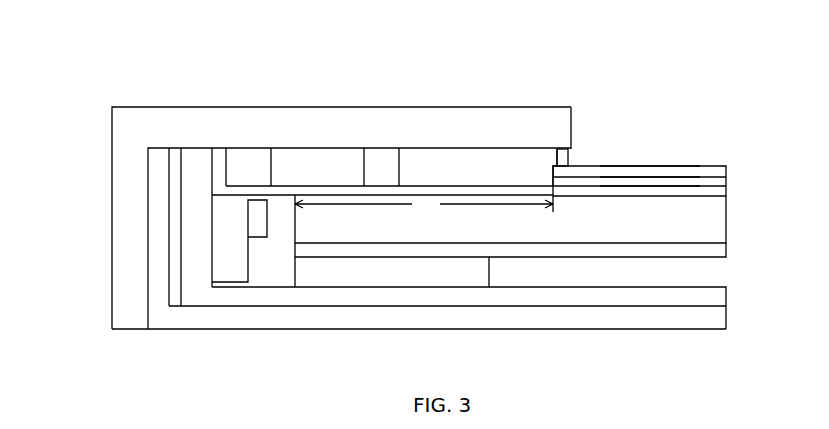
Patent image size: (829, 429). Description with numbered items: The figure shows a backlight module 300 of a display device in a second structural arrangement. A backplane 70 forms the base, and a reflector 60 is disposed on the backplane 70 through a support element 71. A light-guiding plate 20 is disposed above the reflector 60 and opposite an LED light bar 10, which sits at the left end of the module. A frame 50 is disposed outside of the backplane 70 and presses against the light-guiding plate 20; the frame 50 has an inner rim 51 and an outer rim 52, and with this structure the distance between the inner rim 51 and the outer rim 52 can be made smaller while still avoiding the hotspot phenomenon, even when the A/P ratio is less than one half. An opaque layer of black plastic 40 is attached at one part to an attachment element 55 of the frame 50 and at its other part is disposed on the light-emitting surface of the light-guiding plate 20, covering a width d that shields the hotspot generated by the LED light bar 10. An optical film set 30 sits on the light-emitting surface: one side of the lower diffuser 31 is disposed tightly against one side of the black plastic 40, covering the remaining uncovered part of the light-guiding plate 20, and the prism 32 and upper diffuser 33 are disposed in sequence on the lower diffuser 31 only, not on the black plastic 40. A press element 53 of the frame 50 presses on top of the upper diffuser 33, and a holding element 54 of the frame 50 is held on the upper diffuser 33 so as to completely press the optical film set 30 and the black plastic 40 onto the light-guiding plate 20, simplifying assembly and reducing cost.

The backlight module 300 is at (677, 82).
The outer rim 52 is at (112, 126).
The inner rim 51 is at (572, 128).
The frame 50 is at (481, 125).
The attachment element 55 is at (249, 165).
The press element 53 is at (382, 157).
The holding element 54 is at (563, 158).
The black plastic 40 is at (400, 192).
The optical film set 30 is at (771, 161).
The upper diffuser 33 is at (697, 170).
The prism 32 is at (697, 177).
The lower diffuser 31 is at (697, 189).
The light-guiding plate 20 is at (695, 218).
The reflector 60 is at (700, 248).
The support element 71 is at (453, 272).
The backplane 70 is at (697, 296).
The LED light bar 10 is at (248, 238).